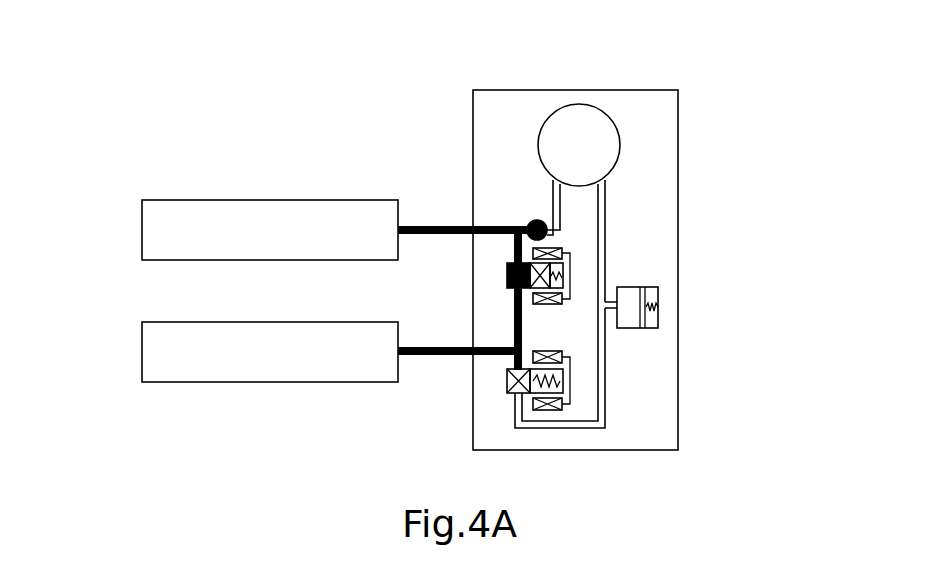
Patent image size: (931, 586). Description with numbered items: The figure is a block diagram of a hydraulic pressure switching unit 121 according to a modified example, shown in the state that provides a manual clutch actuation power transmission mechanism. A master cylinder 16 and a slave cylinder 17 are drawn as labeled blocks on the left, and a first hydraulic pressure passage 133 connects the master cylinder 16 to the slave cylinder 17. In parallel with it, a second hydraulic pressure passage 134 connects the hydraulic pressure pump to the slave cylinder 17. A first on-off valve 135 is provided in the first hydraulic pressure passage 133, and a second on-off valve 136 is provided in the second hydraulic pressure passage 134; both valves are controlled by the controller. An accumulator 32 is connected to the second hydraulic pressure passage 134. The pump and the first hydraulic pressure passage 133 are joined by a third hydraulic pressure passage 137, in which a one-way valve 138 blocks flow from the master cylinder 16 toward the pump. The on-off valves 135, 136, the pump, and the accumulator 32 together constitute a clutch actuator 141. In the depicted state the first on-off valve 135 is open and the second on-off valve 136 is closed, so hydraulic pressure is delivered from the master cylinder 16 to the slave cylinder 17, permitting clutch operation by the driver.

The master cylinder 16 is at (142, 230).
The slave cylinder 17 is at (142, 350).
The accumulator 32 is at (658, 313).
The hydraulic pressure switching unit 121 is at (679, 89).
The first hydraulic pressure passage 133 is at (515, 307).
The second hydraulic pressure passage 134 is at (605, 385).
The first on-off valve 135 is at (507, 275).
The second on-off valve 136 is at (507, 379).
The third hydraulic pressure passage 137 is at (552, 201).
The one-way valve 138 is at (531, 221).
The clutch actuator 141 is at (654, 161).